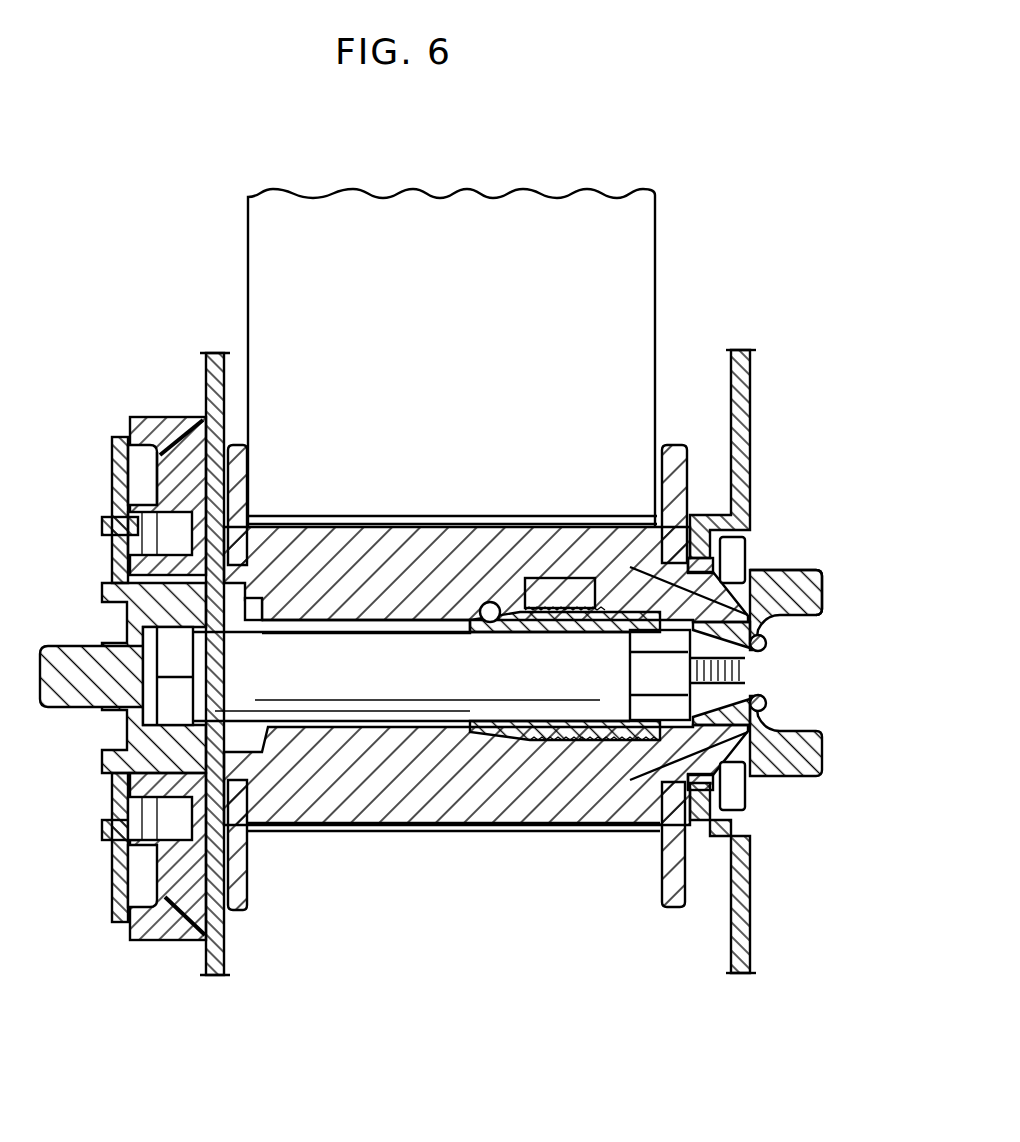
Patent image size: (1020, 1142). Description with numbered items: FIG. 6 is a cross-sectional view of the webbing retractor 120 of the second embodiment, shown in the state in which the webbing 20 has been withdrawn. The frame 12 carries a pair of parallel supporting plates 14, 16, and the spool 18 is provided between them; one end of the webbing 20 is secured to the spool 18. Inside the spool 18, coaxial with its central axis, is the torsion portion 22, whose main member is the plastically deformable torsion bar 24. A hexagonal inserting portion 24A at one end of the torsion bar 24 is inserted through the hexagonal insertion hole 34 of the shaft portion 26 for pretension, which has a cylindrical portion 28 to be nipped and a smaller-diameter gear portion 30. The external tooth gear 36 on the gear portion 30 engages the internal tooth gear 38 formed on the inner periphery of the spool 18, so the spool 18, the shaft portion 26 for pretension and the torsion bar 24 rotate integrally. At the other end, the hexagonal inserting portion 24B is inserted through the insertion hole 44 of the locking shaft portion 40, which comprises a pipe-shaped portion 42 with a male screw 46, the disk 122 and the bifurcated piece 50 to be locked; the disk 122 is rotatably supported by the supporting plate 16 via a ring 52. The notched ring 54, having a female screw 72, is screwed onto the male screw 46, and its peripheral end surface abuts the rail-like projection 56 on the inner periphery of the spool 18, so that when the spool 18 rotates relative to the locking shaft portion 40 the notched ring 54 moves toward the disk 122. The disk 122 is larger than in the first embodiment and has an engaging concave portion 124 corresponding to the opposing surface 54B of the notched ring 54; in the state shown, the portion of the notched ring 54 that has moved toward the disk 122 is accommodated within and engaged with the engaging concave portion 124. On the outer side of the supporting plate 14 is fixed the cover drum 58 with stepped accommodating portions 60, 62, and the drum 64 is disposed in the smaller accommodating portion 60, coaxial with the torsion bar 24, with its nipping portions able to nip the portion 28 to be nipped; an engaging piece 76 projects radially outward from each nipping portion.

The webbing retractor 120 is at (701, 97).
The webbing 20 is at (265, 218).
The supporting plate 14 is at (213, 357).
The frame 12 is at (754, 369).
The supporting plate 16 is at (752, 410).
The spool 18 is at (669, 912).
The torsion portion 22 is at (298, 722).
The torsion bar 24 is at (372, 688).
The inserting portion 24A is at (193, 659).
The inserting portion 24B is at (642, 670).
The shaft portion for pretension 26 is at (46, 644).
The portion to be nipped 28 is at (110, 585).
The gear portion 30 is at (228, 603).
The insertion hole 34 is at (225, 710).
The external tooth gear 36 is at (245, 610).
The internal tooth gear 38 is at (256, 612).
The locking shaft portion 40 is at (820, 568).
The pipe-shaped portion 42 is at (515, 620).
The insertion hole 44 is at (483, 622).
The male screw 46 is at (545, 588).
The piece to be locked 50 is at (827, 612).
The ring 52 is at (717, 565).
The notched ring 54 is at (598, 586).
The opposing surface 54B is at (766, 638).
The rail-like projection 56 is at (450, 782).
The cover drum 58 is at (133, 418).
The accommodating portion 60 is at (167, 527).
The accommodating portion 62 is at (136, 464).
The drum 64 is at (100, 842).
The female screw 72 is at (605, 614).
The engaging piece 76 is at (102, 526).
The disk 122 is at (683, 540).
The engaging concave portion 124 is at (692, 560).